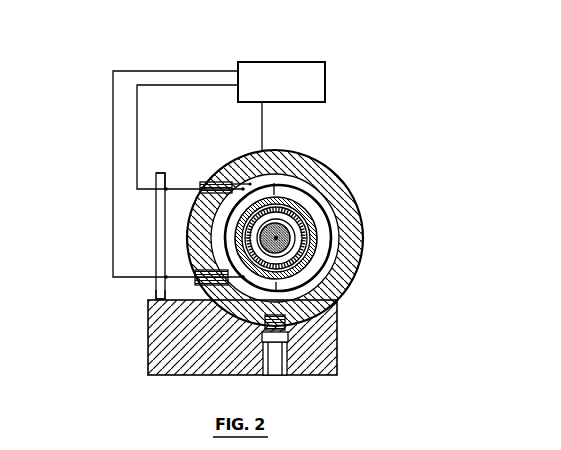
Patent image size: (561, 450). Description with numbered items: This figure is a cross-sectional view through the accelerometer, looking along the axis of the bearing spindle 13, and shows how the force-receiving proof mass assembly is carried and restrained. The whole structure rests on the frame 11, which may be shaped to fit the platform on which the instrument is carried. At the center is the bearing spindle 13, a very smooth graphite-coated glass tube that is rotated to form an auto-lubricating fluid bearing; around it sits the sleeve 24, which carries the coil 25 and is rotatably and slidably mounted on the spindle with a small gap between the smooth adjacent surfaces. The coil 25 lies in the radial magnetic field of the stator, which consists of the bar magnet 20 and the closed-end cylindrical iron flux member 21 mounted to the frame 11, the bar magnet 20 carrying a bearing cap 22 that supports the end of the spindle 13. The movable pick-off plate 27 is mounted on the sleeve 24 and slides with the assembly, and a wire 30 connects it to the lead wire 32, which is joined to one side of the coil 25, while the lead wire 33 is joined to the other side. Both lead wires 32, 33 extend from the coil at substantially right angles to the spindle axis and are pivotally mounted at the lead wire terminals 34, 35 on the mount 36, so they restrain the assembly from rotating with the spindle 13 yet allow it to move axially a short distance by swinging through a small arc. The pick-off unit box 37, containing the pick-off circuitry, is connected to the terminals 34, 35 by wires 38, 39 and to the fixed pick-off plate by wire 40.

The frame 11 is at (330, 340).
The bearing spindle 13 is at (292, 228).
The bar magnet 20 is at (287, 249).
The closed-end cylindrical iron flux member 21 is at (302, 226).
The bearing cap 22 is at (278, 238).
The sleeve 24 is at (306, 207).
The coil 25 is at (302, 185).
The movable pick-off plate 27 is at (287, 192).
The wire 30 is at (238, 172).
The lead wire 32 is at (172, 192).
The lead wire 33 is at (183, 277).
The lead wire terminal 34 is at (165, 191).
The lead wire terminal 35 is at (167, 268).
The mount 36 is at (157, 227).
The pick-off unit box 37 is at (290, 52).
The wire 38 is at (138, 123).
The wire 39 is at (113, 138).
The wire 40 is at (263, 120).